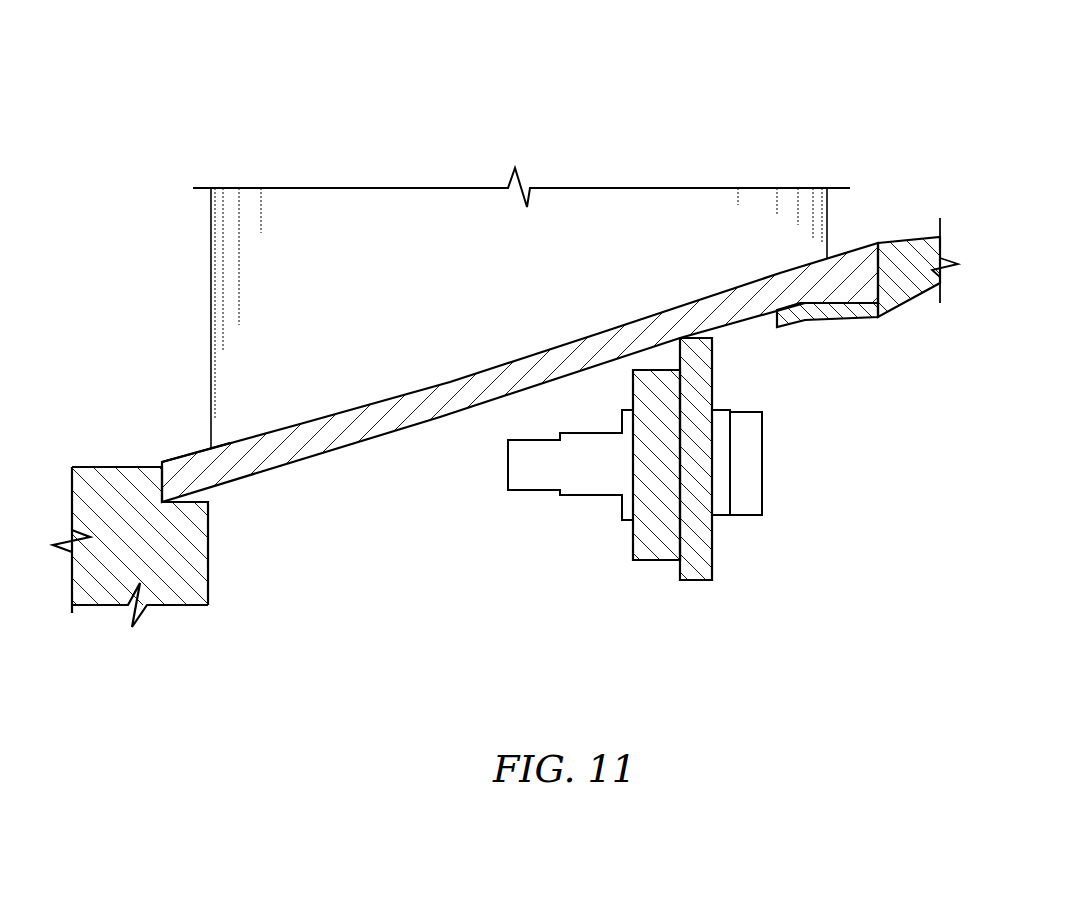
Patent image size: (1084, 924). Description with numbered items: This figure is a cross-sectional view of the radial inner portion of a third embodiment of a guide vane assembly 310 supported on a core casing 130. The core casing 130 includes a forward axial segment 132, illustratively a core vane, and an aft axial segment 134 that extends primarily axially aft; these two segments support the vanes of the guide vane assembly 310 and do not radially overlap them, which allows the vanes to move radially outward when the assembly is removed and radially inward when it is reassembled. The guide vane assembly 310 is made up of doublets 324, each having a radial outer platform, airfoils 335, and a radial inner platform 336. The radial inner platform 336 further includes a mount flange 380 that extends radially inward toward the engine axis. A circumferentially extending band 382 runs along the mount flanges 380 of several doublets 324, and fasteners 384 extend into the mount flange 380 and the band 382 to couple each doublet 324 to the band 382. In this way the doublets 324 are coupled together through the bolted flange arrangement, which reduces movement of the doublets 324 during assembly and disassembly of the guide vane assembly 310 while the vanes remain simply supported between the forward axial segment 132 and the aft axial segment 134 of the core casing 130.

The guide vane assembly 310 is at (147, 92).
The airfoils 335 is at (458, 220).
The doublets 324 is at (460, 361).
The radial inner platform 336 is at (185, 443).
The forward axial segment 132 is at (176, 602).
The core casing 130 is at (869, 249).
The aft axial segment 134 is at (915, 285).
The mount flange 380 is at (714, 388).
The circumferentially extending band 382 is at (652, 562).
The fasteners 384 is at (780, 481).